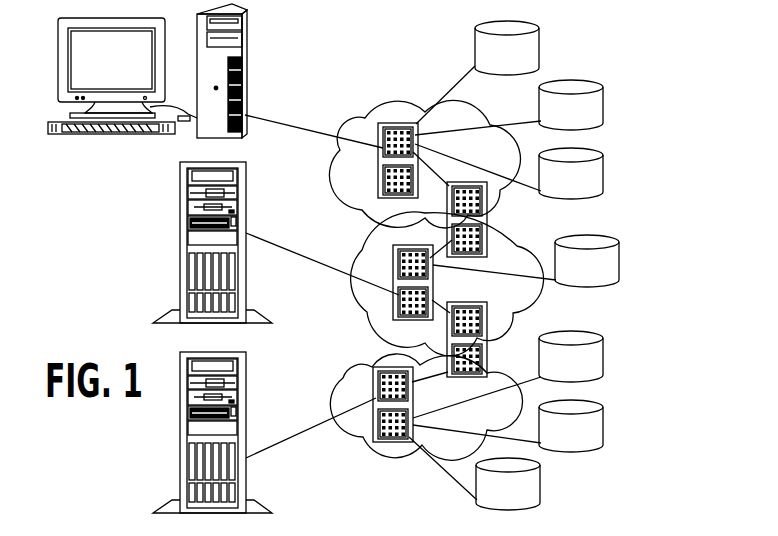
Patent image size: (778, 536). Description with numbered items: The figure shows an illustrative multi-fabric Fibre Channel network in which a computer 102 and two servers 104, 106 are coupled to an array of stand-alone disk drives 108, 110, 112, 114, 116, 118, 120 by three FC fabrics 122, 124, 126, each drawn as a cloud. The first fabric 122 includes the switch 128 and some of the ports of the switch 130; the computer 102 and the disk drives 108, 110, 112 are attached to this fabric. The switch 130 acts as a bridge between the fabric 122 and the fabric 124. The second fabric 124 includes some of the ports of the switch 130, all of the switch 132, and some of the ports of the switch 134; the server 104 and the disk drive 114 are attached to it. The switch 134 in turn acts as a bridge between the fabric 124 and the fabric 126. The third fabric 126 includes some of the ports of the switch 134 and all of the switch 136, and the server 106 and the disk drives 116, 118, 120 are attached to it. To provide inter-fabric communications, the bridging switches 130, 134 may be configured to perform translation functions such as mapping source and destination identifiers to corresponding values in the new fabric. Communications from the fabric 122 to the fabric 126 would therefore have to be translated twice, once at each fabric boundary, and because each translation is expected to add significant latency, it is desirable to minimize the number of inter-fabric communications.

The computer 102 is at (245, 42).
The server 104 is at (247, 187).
The server 106 is at (247, 377).
The disk drive 108 is at (541, 50).
The disk drive 110 is at (603, 113).
The disk drive 112 is at (603, 178).
The disk drive 114 is at (619, 263).
The disk drive 116 is at (603, 368).
The disk drive 118 is at (603, 435).
The disk drive 120 is at (540, 492).
The FC fabric 122 is at (386, 107).
The FC fabric 124 is at (359, 300).
The FC fabric 126 is at (390, 457).
The switch 128 is at (380, 162).
The switch 130 is at (488, 204).
The switch 132 is at (392, 306).
The switch 134 is at (488, 345).
The switch 136 is at (365, 433).